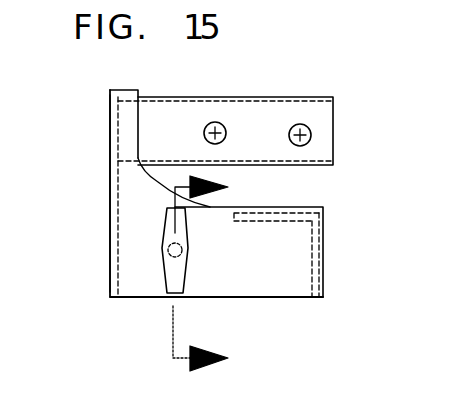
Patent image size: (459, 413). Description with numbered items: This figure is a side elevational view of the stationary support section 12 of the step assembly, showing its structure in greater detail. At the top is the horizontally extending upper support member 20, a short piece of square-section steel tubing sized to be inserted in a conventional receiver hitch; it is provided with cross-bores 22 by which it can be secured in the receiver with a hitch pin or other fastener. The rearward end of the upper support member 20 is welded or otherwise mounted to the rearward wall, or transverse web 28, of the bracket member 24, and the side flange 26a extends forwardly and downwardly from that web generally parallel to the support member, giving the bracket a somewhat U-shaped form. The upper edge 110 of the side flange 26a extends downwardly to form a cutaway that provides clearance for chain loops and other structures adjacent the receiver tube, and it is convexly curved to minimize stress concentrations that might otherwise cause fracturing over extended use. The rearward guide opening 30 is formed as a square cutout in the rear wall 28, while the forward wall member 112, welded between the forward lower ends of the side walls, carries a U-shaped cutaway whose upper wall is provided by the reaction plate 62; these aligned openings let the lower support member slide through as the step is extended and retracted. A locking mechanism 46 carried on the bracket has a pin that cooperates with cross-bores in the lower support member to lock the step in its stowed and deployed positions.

The stationary support section 12 is at (97, 183).
The upper support member 20 is at (220, 114).
The cross-bores 22 is at (227, 133).
The bracket member 24 is at (269, 286).
The side flange 26a is at (287, 286).
The transverse web 28 is at (110, 143).
The rearward guide opening 30 is at (110, 254).
The locking mechanism 46 is at (164, 268).
The reaction plate 62 is at (287, 211).
The upper edge 110 is at (158, 182).
The forward wall member 112 is at (326, 289).